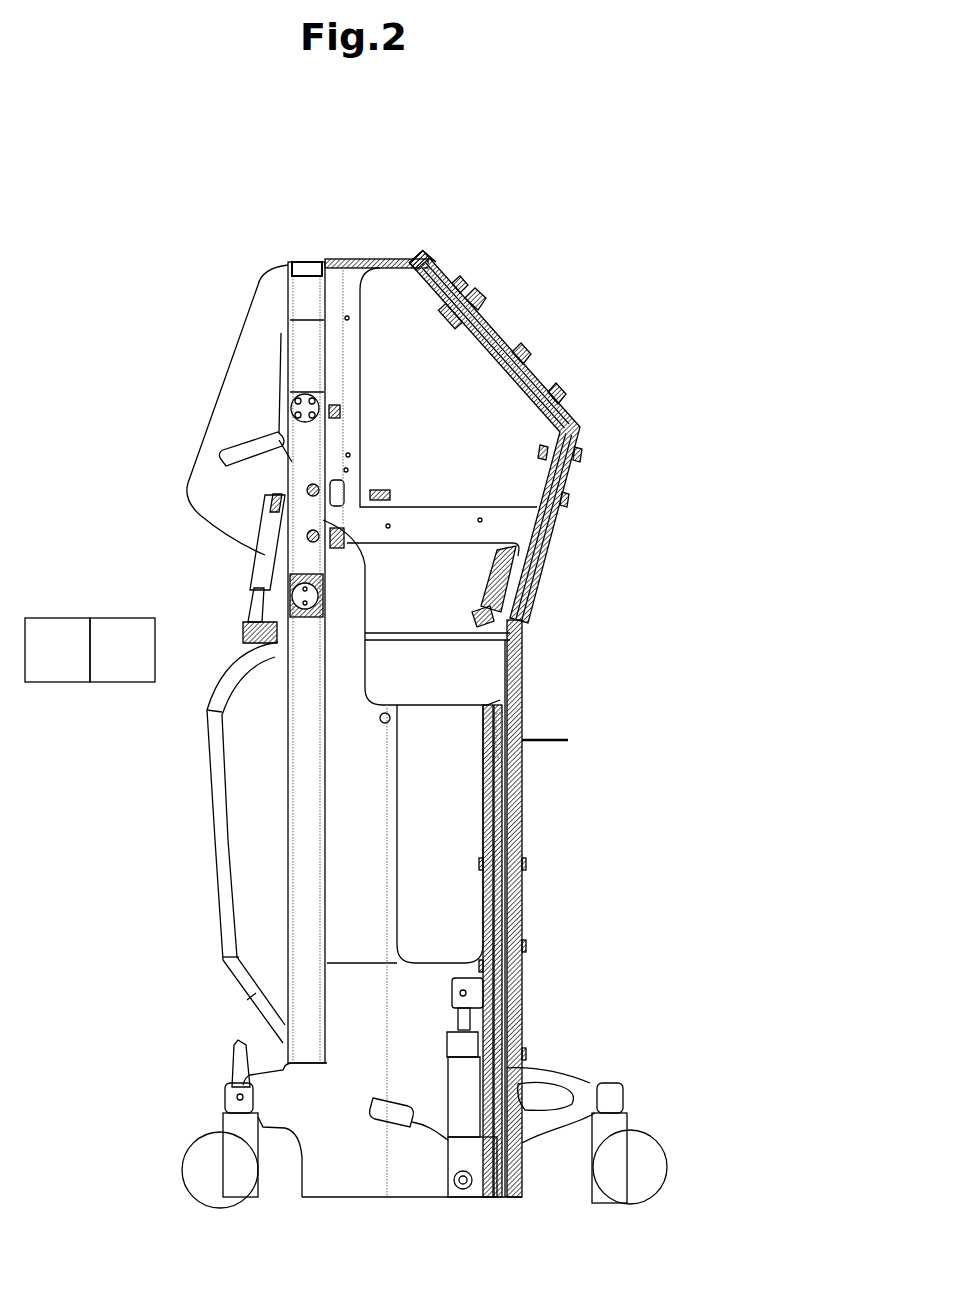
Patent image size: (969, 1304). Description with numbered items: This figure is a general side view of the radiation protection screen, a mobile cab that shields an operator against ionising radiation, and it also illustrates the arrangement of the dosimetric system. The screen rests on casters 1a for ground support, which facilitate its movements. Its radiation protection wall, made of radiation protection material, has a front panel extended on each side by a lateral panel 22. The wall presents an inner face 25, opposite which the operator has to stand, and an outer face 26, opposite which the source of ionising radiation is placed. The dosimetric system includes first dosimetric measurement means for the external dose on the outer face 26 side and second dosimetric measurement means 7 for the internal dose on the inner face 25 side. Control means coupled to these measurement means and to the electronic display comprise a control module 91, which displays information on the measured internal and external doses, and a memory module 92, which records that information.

The lateral panel 22 is at (404, 300).
The outer face 26 is at (515, 346).
The second dosimetric measurement means 7 is at (455, 312).
The inner face 25 is at (546, 455).
The memory module 92 is at (57, 650).
The control module 91 is at (500, 567).
The casters 1a is at (199, 1124).